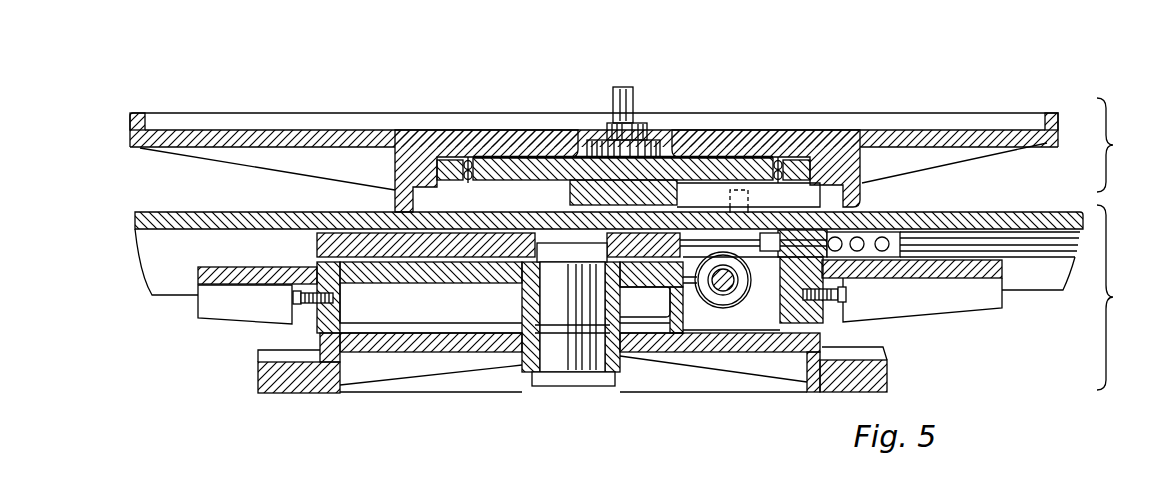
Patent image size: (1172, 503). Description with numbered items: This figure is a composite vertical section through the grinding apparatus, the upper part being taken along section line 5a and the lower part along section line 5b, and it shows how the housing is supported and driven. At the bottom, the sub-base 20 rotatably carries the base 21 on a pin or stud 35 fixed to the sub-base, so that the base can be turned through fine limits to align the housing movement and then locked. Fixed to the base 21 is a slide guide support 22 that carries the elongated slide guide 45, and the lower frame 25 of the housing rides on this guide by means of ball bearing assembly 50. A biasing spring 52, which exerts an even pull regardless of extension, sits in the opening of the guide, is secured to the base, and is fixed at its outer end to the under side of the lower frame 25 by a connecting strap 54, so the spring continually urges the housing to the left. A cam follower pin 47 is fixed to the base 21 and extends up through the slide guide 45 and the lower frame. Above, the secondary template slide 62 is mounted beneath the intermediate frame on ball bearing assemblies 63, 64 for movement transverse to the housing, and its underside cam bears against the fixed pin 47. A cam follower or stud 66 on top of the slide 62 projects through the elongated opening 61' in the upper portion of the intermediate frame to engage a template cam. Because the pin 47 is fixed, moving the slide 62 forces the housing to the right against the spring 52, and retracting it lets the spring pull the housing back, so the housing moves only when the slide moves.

The lower frame 25 is at (1057, 112).
The section line 5a— 5a is at (645, 155).
The section line 5b— 5b is at (643, 297).
The cam follower or stud 66 is at (620, 95).
The elongated opening 61' is at (629, 108).
The secondary template slide 62 is at (497, 160).
The ball bearing assembly 63 is at (466, 160).
The ball bearing assembly 64 is at (777, 157).
The cam follower pin 47 is at (737, 190).
The slide guide 45 is at (317, 248).
The connecting strap 54 is at (800, 245).
The ball bearing assembly 50 is at (893, 237).
The biasing spring 52 is at (748, 287).
The slide guide support 22 is at (238, 315).
The base 21 is at (297, 325).
The sub-base 20 is at (877, 350).
The pin or stud 35 is at (560, 352).